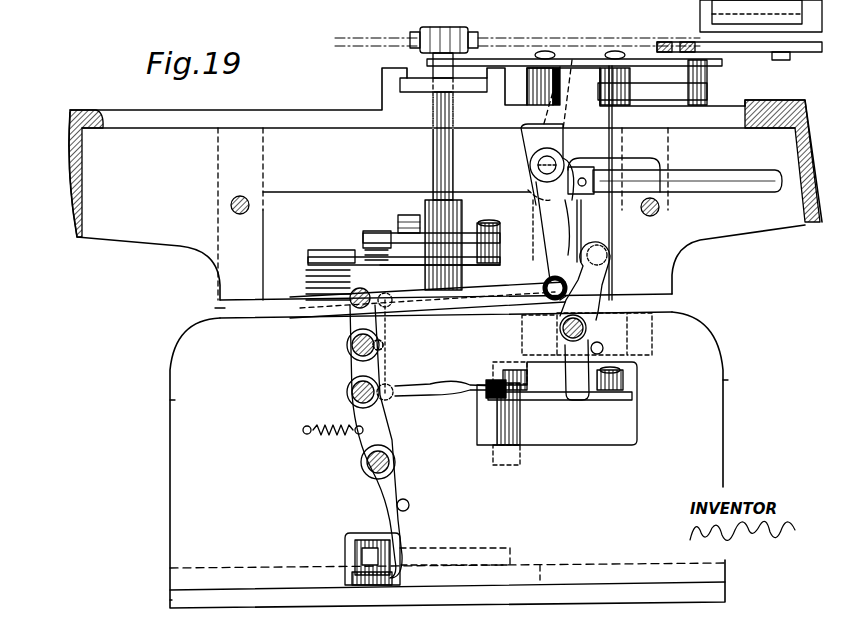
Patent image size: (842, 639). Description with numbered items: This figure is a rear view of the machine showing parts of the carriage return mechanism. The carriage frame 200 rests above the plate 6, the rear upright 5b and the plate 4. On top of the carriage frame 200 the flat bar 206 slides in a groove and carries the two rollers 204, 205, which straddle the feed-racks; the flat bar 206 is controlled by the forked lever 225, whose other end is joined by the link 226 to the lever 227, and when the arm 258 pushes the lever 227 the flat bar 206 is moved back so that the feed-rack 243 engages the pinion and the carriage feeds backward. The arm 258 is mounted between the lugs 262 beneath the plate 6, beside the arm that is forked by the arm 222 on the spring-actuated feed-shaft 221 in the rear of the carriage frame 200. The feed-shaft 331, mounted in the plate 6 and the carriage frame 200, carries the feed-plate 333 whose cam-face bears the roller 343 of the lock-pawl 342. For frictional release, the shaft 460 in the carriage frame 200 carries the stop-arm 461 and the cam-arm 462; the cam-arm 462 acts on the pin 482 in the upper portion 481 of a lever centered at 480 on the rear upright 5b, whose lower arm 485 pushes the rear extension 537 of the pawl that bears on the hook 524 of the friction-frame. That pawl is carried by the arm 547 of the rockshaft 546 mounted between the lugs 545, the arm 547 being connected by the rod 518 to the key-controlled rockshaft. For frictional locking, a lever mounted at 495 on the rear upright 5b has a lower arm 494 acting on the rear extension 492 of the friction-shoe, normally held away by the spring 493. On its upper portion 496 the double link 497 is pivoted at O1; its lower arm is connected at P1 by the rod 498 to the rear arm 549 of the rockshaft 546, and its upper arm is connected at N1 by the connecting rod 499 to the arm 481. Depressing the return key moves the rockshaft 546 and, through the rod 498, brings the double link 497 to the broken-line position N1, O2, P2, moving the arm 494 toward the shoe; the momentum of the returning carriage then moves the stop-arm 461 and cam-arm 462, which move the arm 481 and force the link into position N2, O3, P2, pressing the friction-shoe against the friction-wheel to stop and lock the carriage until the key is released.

The carriage frame 200 is at (160, 243).
The plate 6 is at (225, 308).
The rear upright 5b is at (170, 404).
The plate 4 is at (176, 600).
The roller 205 is at (450, 36).
The feed-shaft 331 is at (453, 156).
The flat bar 206 is at (420, 88).
The forked lever 225 is at (510, 70).
The link 226 is at (604, 60).
The lever 227 is at (707, 68).
The feed-rack 243 is at (742, 42).
The roller 204 is at (756, 16).
The stop-arm 461 is at (552, 148).
The shaft 460 is at (530, 165).
The cam-arm 462 is at (542, 264).
The arm 222 is at (581, 218).
The arm 258 is at (616, 148).
The feed-shaft 221 is at (706, 178).
The pin 482 is at (608, 254).
The upper portion of lever 481 is at (591, 321).
The lever center 480 is at (588, 332).
The lugs 262 is at (522, 322).
The feed-plate 333 is at (380, 234).
The roller 343 is at (500, 236).
The lock-pawl 342 is at (470, 263).
The connecting rod 499 is at (452, 300).
The pivot N' N1 is at (364, 289).
The position N2 is at (390, 332).
The upper portion of lever 496 is at (385, 420).
The pivot O' O1 is at (350, 342).
The position O2 is at (390, 334).
The position O3 is at (386, 346).
The double link 497 is at (355, 364).
The pivot P' P1 is at (351, 390).
The position P2 is at (390, 388).
The rod 498 is at (466, 385).
The spring 493 is at (325, 434).
The lever pivot 495 is at (395, 460).
The lower arm 494 is at (398, 520).
The rear extension 492 is at (356, 552).
The hook 524 is at (481, 550).
The lower arm 485 is at (557, 402).
The rockshaft 546 is at (520, 412).
The arm 547 is at (558, 400).
The rear extension 537 is at (532, 382).
The rod 518 is at (625, 382).
The rear arm 549 is at (486, 396).
The lugs 545 is at (498, 370).